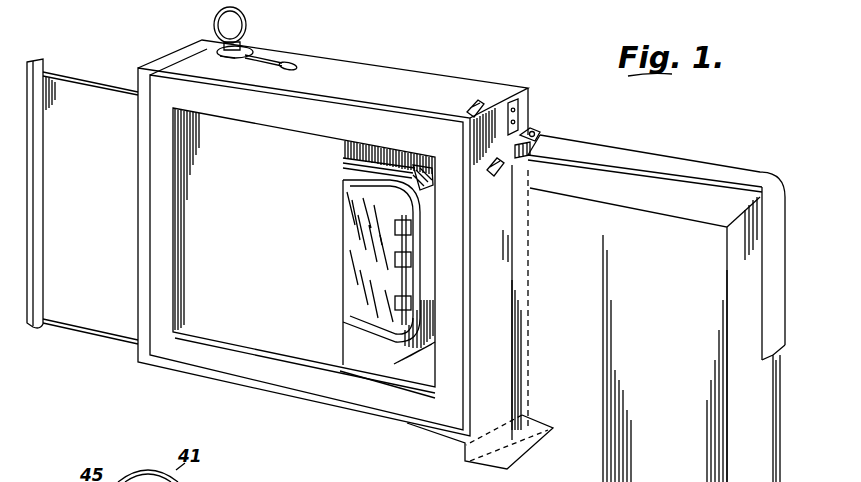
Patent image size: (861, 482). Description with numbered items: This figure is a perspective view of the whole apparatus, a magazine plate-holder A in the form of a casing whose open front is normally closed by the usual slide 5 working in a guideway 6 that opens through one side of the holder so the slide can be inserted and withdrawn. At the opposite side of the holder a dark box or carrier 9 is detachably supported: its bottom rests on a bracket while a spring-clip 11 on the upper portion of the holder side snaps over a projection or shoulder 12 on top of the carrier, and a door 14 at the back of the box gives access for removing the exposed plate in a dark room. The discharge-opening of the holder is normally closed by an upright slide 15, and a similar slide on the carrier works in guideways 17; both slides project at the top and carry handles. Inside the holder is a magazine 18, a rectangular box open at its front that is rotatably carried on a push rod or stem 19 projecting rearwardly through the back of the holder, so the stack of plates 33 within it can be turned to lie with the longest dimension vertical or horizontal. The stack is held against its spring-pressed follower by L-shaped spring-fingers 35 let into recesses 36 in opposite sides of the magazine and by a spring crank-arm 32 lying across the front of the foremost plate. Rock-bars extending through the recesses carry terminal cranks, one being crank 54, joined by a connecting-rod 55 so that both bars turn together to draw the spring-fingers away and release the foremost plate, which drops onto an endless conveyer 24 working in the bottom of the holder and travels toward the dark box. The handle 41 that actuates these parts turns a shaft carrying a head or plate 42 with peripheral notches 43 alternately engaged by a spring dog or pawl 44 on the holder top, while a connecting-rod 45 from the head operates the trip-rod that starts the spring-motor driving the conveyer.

The frame A is at (180, 47).
The slide 5 is at (100, 315).
The guideway 6 is at (343, 380).
The dark box or carrier 9 is at (644, 308).
The spring-clip 11 is at (538, 131).
The projection or shoulder 12 is at (528, 167).
The door 14 is at (781, 410).
The upright slide 15 is at (472, 104).
The guideways 17 is at (481, 188).
The magazine 18 is at (343, 181).
The push rod or stem 19 is at (470, 462).
The endless conveyer 24 is at (390, 380).
The spring crank-arm 32 is at (390, 278).
The stack of plates 33 is at (350, 233).
The spring-fingers 35 is at (406, 302).
The recesses 36 is at (420, 325).
The handle 41 is at (247, 19).
The head or plate 42 is at (255, 47).
The peripheral notches 43 is at (227, 58).
The spring dog or pawl 44 is at (291, 62).
The connecting-rod 45 is at (220, 45).
The terminal crank 54 is at (423, 187).
The connecting-rod 55 is at (345, 160).